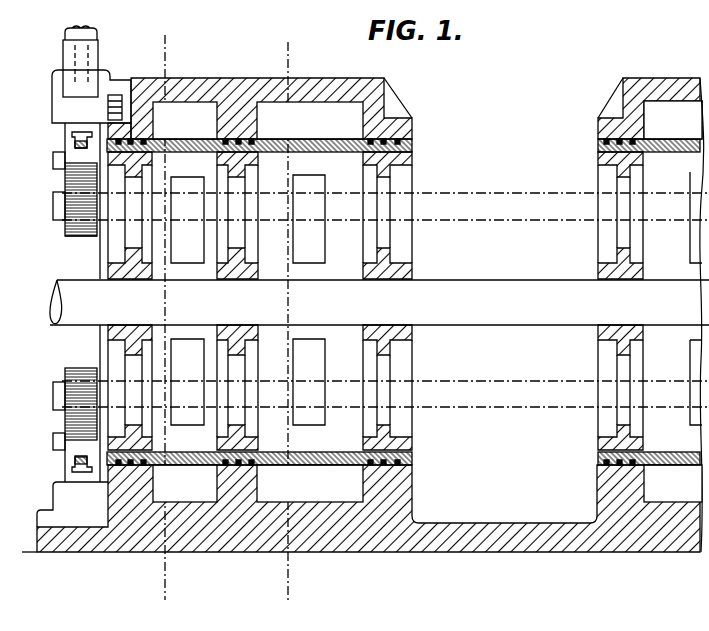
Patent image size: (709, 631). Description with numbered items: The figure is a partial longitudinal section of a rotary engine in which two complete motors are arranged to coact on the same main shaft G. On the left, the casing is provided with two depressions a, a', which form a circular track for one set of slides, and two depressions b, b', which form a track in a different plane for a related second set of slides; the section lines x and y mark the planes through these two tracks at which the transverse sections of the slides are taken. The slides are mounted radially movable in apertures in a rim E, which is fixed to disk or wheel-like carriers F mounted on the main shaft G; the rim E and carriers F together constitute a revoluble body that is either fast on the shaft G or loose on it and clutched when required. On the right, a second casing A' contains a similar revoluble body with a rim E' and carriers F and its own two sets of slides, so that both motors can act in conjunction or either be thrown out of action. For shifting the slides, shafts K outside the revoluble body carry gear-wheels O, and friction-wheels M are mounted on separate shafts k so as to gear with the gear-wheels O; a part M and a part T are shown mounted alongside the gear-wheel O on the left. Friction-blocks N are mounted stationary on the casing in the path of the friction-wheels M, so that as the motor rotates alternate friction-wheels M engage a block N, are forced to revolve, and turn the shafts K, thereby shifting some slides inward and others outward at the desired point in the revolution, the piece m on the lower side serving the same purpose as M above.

The section line x x is at (174, 319).
The section line y y is at (297, 323).
The main shaft G is at (379, 302).
The depression a is at (405, 108).
The depression b is at (310, 120).
The depression a' is at (362, 508).
The depression b' is at (310, 483).
The second casing A' is at (651, 299).
The rim E is at (259, 302).
The bearing plate (right) E' is at (649, 302).
The wheel-like carrier F is at (247, 236).
The shaft K is at (65, 213).
The friction-block N is at (63, 125).
The adjusting key T is at (80, 141).
The separate shaft k is at (56, 447).
The friction-wheel M is at (65, 151).
The retaining bracket (lower) m is at (67, 422).
The gear-wheel O is at (65, 184).